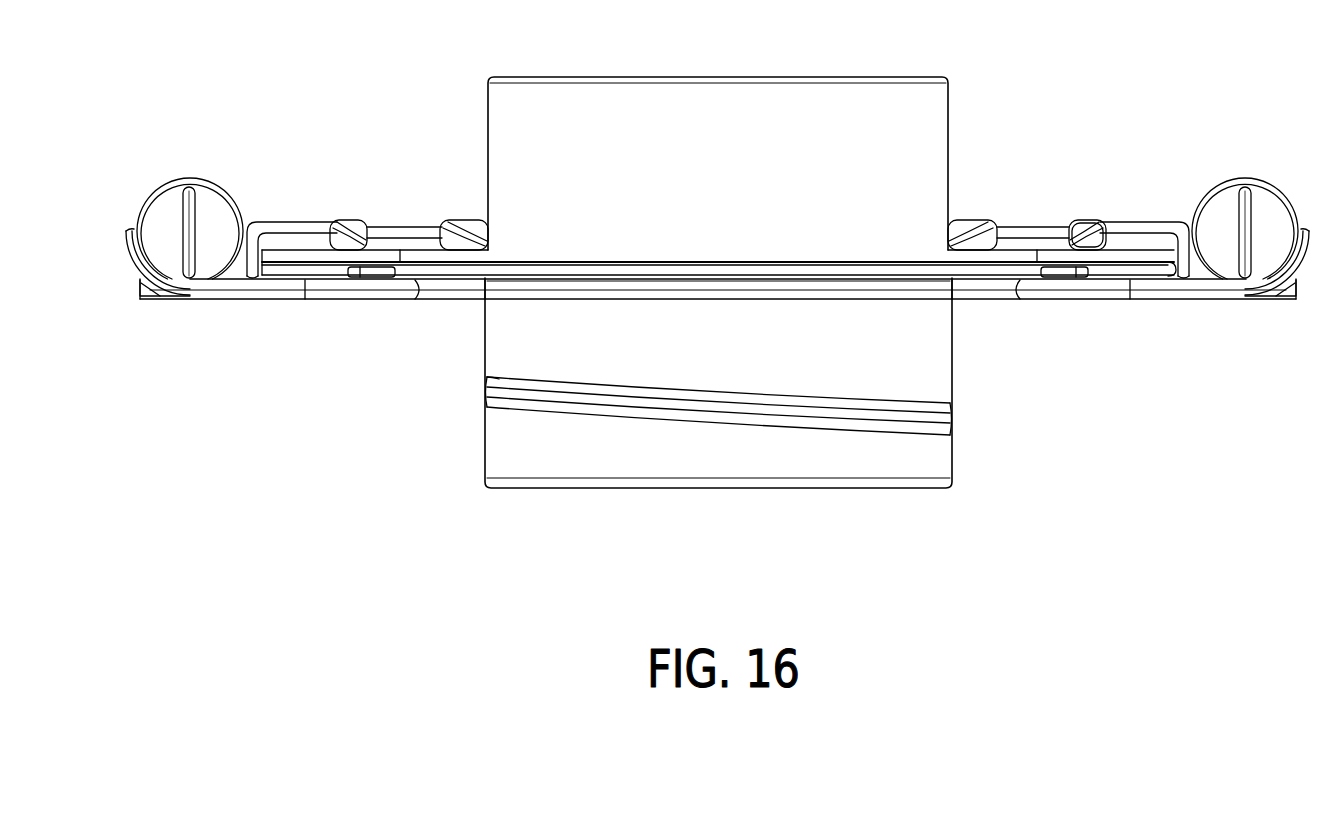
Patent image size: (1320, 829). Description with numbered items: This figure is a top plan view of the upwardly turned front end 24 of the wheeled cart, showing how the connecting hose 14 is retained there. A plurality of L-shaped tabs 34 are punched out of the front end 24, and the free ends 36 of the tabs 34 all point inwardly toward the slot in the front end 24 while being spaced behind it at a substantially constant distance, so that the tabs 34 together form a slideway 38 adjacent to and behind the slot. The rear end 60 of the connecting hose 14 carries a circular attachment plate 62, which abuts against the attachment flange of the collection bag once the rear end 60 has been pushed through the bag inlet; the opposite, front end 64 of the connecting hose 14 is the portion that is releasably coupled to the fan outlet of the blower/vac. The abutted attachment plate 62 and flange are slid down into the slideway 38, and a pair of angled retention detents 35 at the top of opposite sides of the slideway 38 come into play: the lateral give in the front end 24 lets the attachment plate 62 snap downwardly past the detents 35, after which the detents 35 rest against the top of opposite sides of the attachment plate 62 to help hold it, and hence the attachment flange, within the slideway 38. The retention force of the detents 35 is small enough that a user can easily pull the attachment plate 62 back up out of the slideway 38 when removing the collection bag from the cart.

The connecting hose 14 is at (980, 435).
The front end 24 is at (1085, 293).
The L-shaped tabs 34 is at (281, 210).
The retention detents 35 is at (367, 274).
The free ends 36 is at (1130, 228).
The slideway 38 is at (1112, 236).
The rear end 60 is at (900, 148).
The attachment plate 62 is at (312, 271).
The front end 64 is at (440, 256).